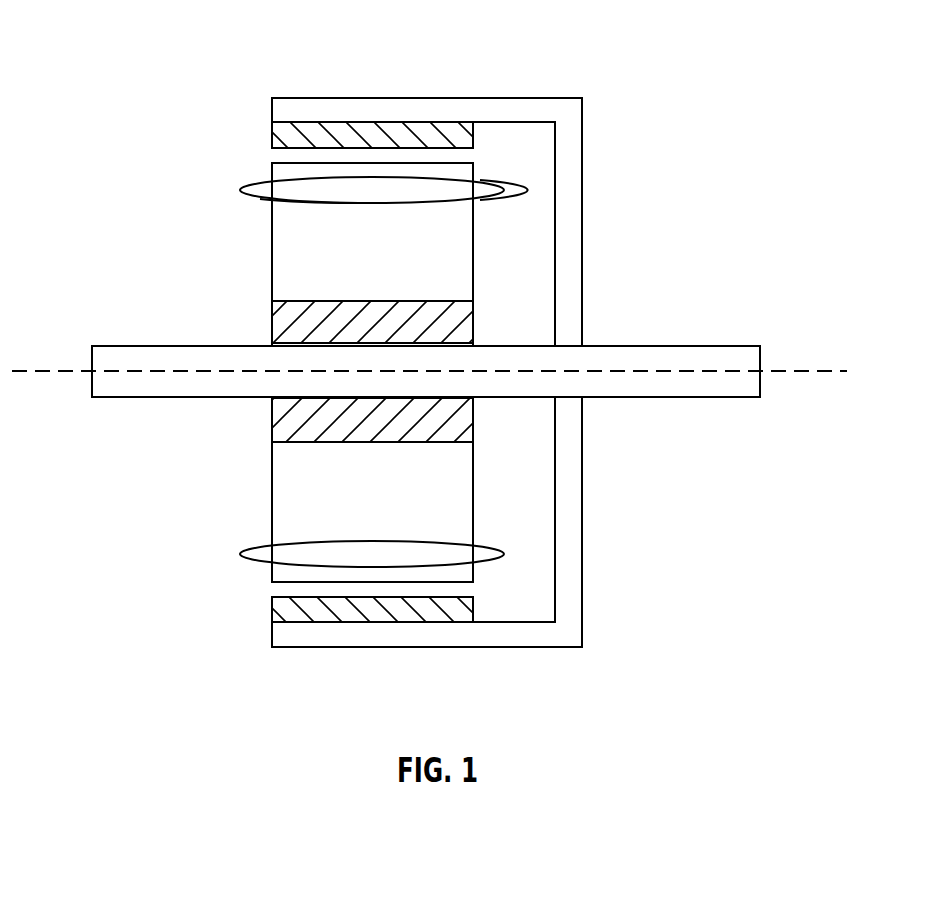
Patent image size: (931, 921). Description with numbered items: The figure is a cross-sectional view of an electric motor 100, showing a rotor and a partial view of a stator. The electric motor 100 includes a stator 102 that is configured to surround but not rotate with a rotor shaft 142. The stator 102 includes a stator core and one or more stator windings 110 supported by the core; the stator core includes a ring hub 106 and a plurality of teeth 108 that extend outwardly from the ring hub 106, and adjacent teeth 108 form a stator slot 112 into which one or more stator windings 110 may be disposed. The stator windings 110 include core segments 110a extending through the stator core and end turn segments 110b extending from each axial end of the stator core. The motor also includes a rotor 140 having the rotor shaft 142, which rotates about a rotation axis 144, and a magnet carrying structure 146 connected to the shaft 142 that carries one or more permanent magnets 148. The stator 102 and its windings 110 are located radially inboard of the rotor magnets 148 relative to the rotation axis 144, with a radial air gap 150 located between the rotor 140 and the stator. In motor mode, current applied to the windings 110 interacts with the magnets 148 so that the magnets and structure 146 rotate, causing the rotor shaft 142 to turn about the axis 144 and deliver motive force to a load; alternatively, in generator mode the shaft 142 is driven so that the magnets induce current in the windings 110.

The electric motor 100 is at (158, 50).
The stator 102 is at (212, 248).
The ring hub 106 is at (272, 327).
The teeth 108 is at (272, 166).
The stator windings 110 is at (247, 185).
The core segments 110a is at (337, 214).
The end turn segments 110b is at (493, 208).
The stator slot 112 is at (462, 288).
The rotor 140 is at (638, 251).
The rotor shaft 142 is at (688, 397).
The rotation axis 144 is at (815, 371).
The magnet carrying structure 146 is at (582, 163).
The permanent magnets 148 is at (272, 132).
The radial air gap 150 is at (277, 590).